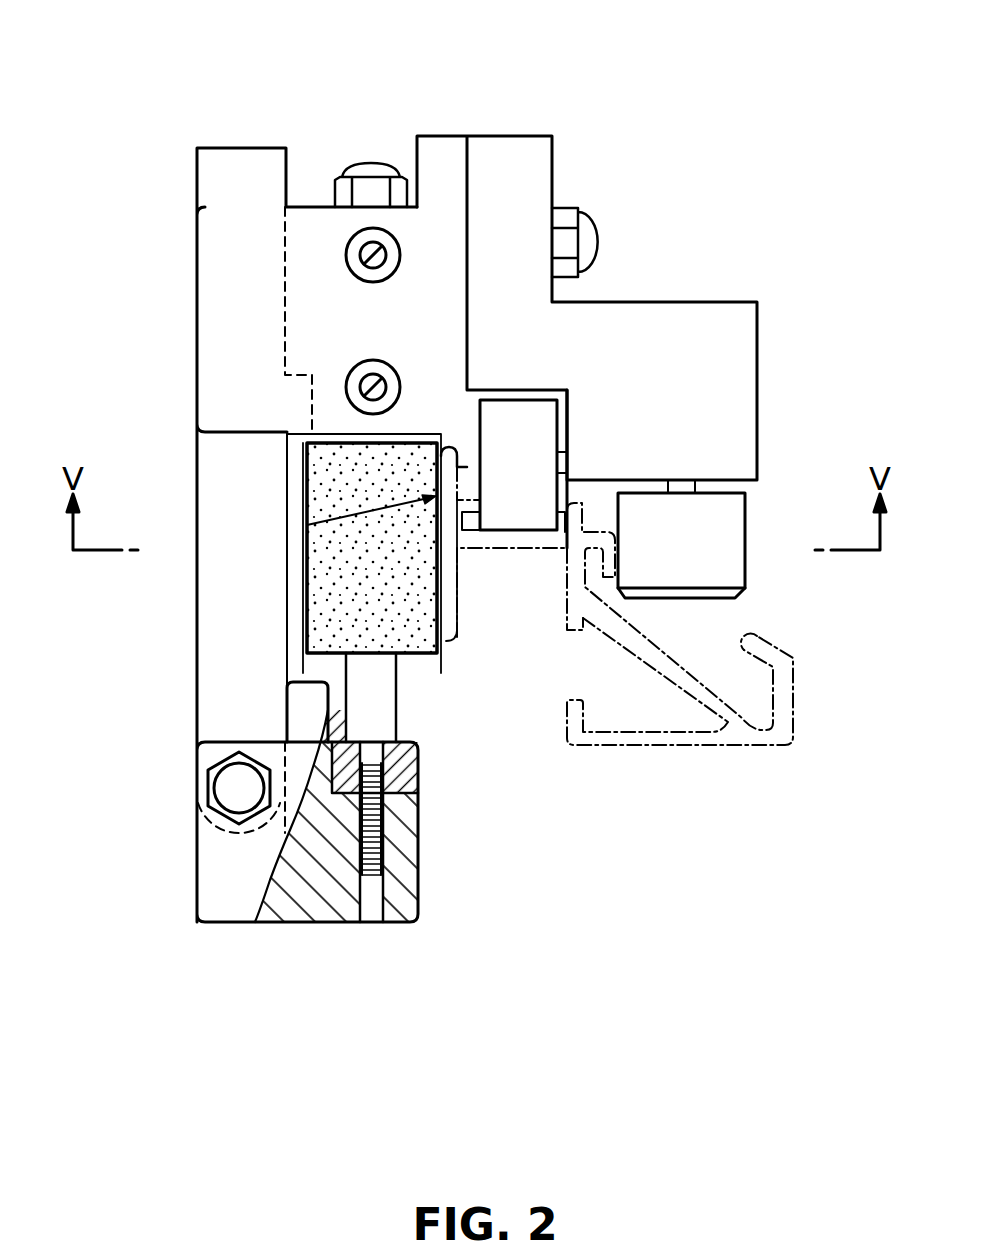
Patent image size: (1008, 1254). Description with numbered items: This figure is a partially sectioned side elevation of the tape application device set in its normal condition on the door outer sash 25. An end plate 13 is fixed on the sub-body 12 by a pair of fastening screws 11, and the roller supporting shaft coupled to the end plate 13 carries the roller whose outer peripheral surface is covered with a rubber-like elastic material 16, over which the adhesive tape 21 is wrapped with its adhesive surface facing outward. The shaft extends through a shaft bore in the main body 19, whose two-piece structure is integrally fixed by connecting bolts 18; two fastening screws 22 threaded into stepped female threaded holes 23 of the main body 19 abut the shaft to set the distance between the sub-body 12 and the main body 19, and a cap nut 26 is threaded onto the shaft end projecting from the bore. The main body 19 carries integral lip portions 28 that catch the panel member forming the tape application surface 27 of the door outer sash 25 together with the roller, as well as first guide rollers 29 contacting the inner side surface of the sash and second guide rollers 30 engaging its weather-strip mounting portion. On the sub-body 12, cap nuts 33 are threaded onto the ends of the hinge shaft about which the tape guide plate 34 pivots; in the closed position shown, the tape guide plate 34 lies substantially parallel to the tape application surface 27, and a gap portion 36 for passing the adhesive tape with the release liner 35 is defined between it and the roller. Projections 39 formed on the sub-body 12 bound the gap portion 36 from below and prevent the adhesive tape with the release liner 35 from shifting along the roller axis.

The fastening screws 11 is at (387, 848).
The sub-body 12 is at (332, 910).
The end plate 13 is at (420, 779).
The rubber-like elastic material 16 is at (400, 565).
The connecting bolts 18 is at (587, 240).
The main body 19 is at (560, 126).
The adhesive tape 21 is at (443, 650).
The fastening screw 22 is at (362, 243).
The stepped female threaded hole 23 is at (347, 262).
The door outer sash 25 is at (710, 745).
The cap nut 26 is at (367, 168).
The tape application surface 27 is at (304, 524).
The lip portions 28 is at (463, 450).
The first guide rollers 29 is at (720, 562).
The second guide rollers 30 is at (542, 453).
The cap nuts 33 is at (223, 783).
The tape guide plate 34 is at (215, 637).
The adhesive tape with the release liner 35 is at (300, 486).
The gap portion 36 is at (298, 597).
The projections 39 is at (297, 704).